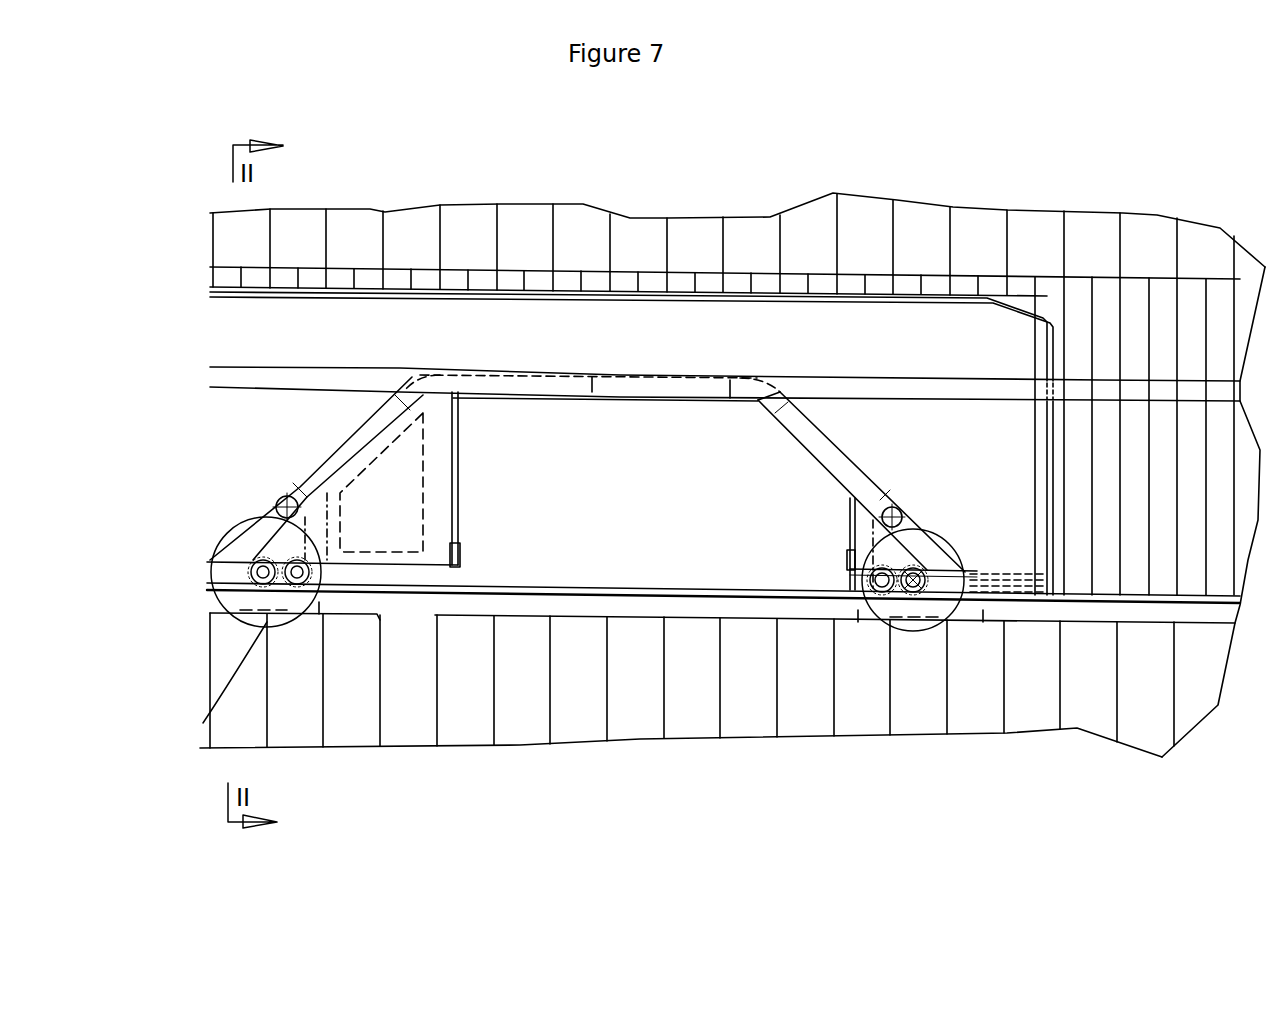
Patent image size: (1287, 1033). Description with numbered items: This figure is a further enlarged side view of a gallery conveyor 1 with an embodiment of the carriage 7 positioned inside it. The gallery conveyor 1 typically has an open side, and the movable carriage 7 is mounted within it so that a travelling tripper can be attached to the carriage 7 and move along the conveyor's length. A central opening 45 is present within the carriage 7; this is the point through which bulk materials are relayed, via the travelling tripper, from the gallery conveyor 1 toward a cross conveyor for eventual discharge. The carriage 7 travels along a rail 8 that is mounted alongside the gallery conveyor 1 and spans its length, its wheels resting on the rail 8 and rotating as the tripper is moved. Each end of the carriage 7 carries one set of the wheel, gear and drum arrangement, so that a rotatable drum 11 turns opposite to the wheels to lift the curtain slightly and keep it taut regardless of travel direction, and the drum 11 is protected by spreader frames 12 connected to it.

The gallery conveyor 1 is at (1157, 213).
The carriage 7 is at (823, 295).
The rail 8 is at (637, 588).
The central opening 45 is at (605, 487).
The rotatable drum 11 is at (913, 630).
The spreader frames 12 is at (858, 618).